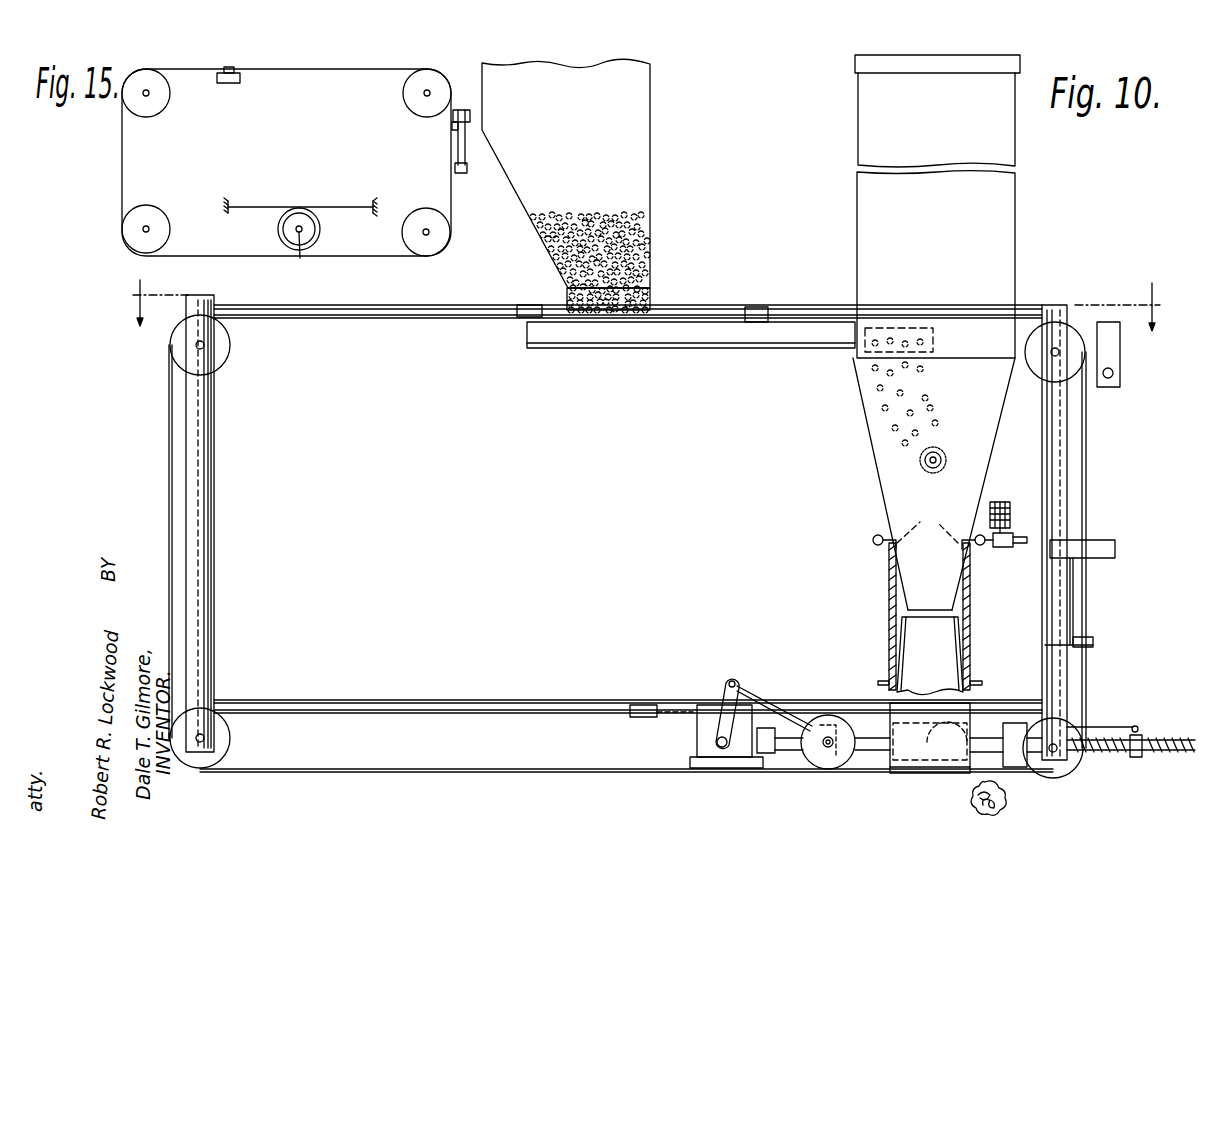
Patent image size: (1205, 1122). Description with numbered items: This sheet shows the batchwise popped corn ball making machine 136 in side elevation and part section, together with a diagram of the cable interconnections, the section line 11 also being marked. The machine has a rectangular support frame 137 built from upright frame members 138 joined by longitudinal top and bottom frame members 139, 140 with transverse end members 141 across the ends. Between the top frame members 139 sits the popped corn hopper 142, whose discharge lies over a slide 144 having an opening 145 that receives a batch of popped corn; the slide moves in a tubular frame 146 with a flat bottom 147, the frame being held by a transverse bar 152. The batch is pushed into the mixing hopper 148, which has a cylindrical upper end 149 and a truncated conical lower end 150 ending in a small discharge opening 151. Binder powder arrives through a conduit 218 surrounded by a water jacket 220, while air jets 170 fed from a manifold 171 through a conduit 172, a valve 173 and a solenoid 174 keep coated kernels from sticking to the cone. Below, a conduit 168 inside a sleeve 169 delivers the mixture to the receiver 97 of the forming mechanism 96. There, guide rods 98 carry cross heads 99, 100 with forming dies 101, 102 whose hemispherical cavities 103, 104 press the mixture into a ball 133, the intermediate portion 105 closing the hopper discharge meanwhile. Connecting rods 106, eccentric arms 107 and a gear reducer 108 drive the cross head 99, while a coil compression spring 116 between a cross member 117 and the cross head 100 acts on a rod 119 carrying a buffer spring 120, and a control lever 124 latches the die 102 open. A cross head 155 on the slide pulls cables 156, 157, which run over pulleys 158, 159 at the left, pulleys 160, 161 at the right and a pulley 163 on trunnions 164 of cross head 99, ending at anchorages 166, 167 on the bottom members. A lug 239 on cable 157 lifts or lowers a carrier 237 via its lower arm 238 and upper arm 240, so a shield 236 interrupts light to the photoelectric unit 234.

In FIG. 10, the section line 11- 11 is at (651, 305).
In FIG. 10, the popped corn ball forming mechanism 96 is at (883, 790).
In FIG. 10, the receiver 97 is at (960, 774).
In FIG. 10, the guide rods 98 is at (1000, 750).
In FIG. 10, the cross head 99 is at (801, 770).
In FIG. 10, the cross head 100 is at (1056, 766).
In FIG. 10, the forming die 101 is at (877, 757).
In FIG. 10, the forming die 102 is at (1025, 722).
In FIG. 10, the hemispherical cavity 103 is at (940, 761).
In FIG. 10, the hemispherical cavity 104 is at (1003, 722).
In FIG. 10, the intermediate portion 105 is at (907, 768).
In FIG. 10, the connecting rods 106 is at (756, 692).
In FIG. 10, the eccentric arms 107 is at (727, 681).
In FIG. 10, the gear reducer 108 is at (697, 738).
In FIG. 10, the coil compression spring 116 is at (1137, 726).
In FIG. 10, the cross member 117 is at (1140, 758).
In FIG. 10, the rod 119 is at (1190, 785).
In FIG. 10, the buffer spring 120 is at (1156, 740).
In FIG. 10, the control lever 124 is at (1108, 727).
In FIG. 10, the ball 133 is at (1004, 811).
In FIG. 15, the popped corn ball making machine 136 is at (235, 277).
In FIG. 10, the support frame 137 is at (186, 417).
In FIG. 10, the upright frame members 138 is at (213, 515).
In FIG. 10, the longitudinal top frame members 139 is at (400, 319).
In FIG. 10, the longitudinal bottom frame members 140 is at (402, 699).
In FIG. 10, the transverse end members 141 is at (217, 298).
In FIG. 10, the popped corn hopper 142 is at (652, 138).
In FIG. 10, the slide 144 is at (930, 328).
In FIG. 10, the opening 145 is at (894, 330).
In FIG. 10, the tubular frame 146 is at (615, 343).
In FIG. 10, the flat bottom 147 is at (698, 349).
In FIG. 10, the mixing hopper 148 is at (1032, 197).
In FIG. 10, the cylindrical upper end 149 is at (1018, 228).
In FIG. 10, the truncated conical lower end 150 is at (911, 484).
In FIG. 10, the discharge opening 151 is at (935, 611).
In FIG. 10, the transverse bar 152 is at (761, 307).
In FIG. 15, the cross head 155 is at (230, 73).
In FIG. 10, the cross head 155 is at (532, 305).
In FIG. 15, the cable 156 is at (192, 69).
In FIG. 10, the cable 156 is at (168, 448).
In FIG. 15, the cable 157 is at (362, 70).
In FIG. 10, the cable 157 is at (1087, 443).
In FIG. 15, the pulley 158 is at (166, 105).
In FIG. 10, the pulley 158 is at (229, 352).
In FIG. 15, the pulley 159 is at (133, 225).
In FIG. 10, the pulley 159 is at (222, 738).
In FIG. 15, the pulley 160 is at (430, 70).
In FIG. 10, the pulley 160 is at (1077, 348).
In FIG. 15, the pulley 161 is at (440, 224).
In FIG. 10, the pulley 161 is at (1080, 765).
In FIG. 15, the pulley 163 is at (287, 232).
In FIG. 10, the pulley 163 is at (815, 757).
In FIG. 15, the trunnions 164 is at (306, 256).
In FIG. 10, the trunnions 164 is at (830, 755).
In FIG. 15, the anchorage 166 is at (226, 207).
In FIG. 10, the anchorage 166 is at (648, 703).
In FIG. 15, the anchorage 167 is at (378, 206).
In FIG. 10, the conduit 168 is at (962, 632).
In FIG. 10, the sleeve 169 is at (889, 585).
In FIG. 10, the air jets 170 is at (927, 523).
In FIG. 10, the manifold 171 is at (873, 540).
In FIG. 10, the conduit 172 is at (1020, 548).
In FIG. 10, the valve 173 is at (990, 596).
In FIG. 10, the solenoid 174 is at (1005, 501).
In FIG. 10, the conduit 218 is at (947, 456).
In FIG. 10, the water jacket 220 is at (946, 451).
In FIG. 10, the photoelectric unit 234 is at (1121, 366).
In FIG. 15, the shield 236 is at (463, 109).
In FIG. 10, the shield 236 is at (1120, 541).
In FIG. 10, the carrier 237 is at (1074, 595).
In FIG. 15, the lower arm 238 is at (455, 167).
In FIG. 10, the lower arm 238 is at (1094, 645).
In FIG. 15, the lug 239 is at (452, 125).
In FIG. 10, the lug 239 is at (1088, 638).
In FIG. 15, the upper arm 240 is at (453, 117).
In FIG. 10, the upper arm 240 is at (1073, 562).